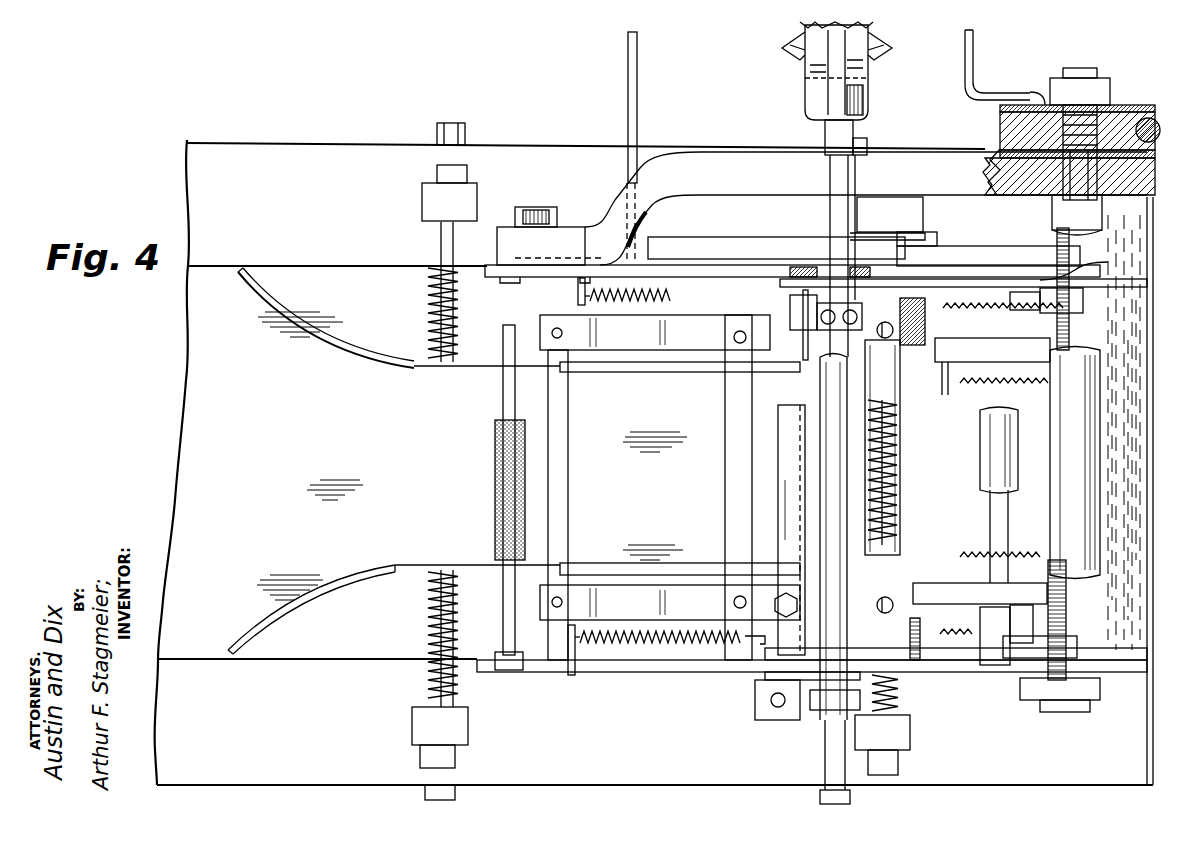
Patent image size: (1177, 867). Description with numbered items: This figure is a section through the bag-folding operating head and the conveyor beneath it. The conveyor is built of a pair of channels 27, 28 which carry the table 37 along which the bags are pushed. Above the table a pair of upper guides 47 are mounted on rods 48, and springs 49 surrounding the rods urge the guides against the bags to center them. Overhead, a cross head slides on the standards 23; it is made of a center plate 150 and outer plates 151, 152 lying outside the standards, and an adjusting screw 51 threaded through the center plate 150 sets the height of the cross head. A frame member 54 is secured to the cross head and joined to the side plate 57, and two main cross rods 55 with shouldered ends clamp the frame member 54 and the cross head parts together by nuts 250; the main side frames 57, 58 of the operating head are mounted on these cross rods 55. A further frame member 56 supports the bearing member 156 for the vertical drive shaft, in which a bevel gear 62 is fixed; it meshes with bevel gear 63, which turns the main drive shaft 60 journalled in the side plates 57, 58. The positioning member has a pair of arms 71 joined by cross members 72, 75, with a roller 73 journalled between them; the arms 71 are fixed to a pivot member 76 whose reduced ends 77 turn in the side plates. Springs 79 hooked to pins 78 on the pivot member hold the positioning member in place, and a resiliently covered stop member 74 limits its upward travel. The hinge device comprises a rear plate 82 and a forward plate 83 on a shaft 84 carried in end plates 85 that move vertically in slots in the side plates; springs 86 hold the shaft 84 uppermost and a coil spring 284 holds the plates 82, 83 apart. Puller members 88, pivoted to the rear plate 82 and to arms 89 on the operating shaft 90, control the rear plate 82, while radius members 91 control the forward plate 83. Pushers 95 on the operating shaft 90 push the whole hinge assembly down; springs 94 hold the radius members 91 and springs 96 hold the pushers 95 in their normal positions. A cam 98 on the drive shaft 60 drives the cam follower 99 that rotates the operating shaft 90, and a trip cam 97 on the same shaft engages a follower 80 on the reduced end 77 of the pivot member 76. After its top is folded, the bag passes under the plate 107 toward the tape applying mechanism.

The standards 23 is at (1004, 111).
The channel 27 is at (258, 147).
The channel 28 is at (317, 662).
The table 37 is at (186, 367).
The upper guides 47 is at (410, 370).
The rods 48 is at (432, 284).
The springs 49 is at (432, 302).
The adjusting screw 51 is at (1152, 134).
The frame member 54 is at (722, 158).
The main cross rods 55 is at (1105, 213).
The frame member 56 is at (638, 58).
The side plate 57 is at (658, 266).
The side frame 58 is at (548, 672).
The drive shaft 60 is at (825, 134).
The bevel gear 62 is at (800, 33).
The bevel gear 63 is at (795, 57).
The arms 71 is at (676, 327).
The cross member 72 is at (568, 406).
The roller 73 is at (505, 393).
The stop member 74 is at (495, 460).
The cross member 75 is at (727, 414).
The pivot member 76 is at (785, 523).
The reduced ends 77 is at (778, 678).
The pins 78 is at (760, 644).
The springs 79 is at (672, 298).
The follower 80 is at (755, 705).
The rear plate 82 is at (805, 352).
The forward plate 83 is at (900, 418).
The shaft 84 is at (900, 452).
The end plates 85 is at (912, 290).
The springs 86 is at (893, 333).
The puller members 88 is at (792, 307).
The arms 89 is at (1085, 301).
The operating shaft 90 is at (975, 503).
The radius members 91 is at (960, 290).
The springs 94 is at (965, 313).
The pushers 95 is at (1035, 350).
The springs 96 is at (980, 390).
The trip cam 97 is at (840, 712).
The cam 98 is at (708, 242).
The cam follower 99 is at (992, 266).
The plate 107 is at (1020, 519).
The center plate 150 is at (1010, 129).
The outer plate 151 is at (1045, 96).
The outer plate 152 is at (1010, 153).
The bearing member 156 is at (805, 78).
The nuts 250 is at (1098, 92).
The coil spring 284 is at (899, 472).